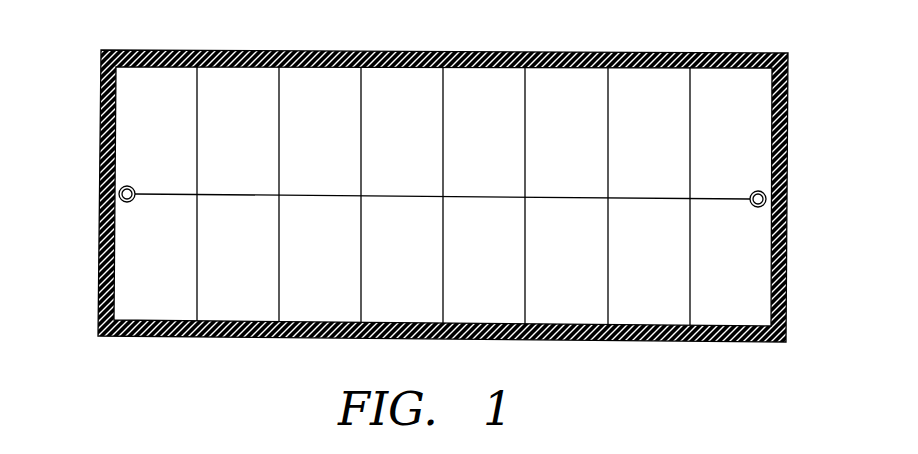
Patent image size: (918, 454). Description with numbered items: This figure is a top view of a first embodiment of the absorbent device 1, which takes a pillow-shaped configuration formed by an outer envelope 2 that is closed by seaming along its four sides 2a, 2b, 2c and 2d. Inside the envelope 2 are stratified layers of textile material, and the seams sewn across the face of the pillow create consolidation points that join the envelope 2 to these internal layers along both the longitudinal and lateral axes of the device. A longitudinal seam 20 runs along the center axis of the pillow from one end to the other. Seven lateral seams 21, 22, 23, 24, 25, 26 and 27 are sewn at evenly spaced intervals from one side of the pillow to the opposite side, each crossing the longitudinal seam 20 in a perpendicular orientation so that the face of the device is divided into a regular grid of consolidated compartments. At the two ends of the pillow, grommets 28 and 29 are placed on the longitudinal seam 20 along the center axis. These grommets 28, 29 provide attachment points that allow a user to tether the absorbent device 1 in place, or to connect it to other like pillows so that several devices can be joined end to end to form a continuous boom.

The absorbent device 1 is at (490, 175).
The envelope 2 is at (570, 98).
The side 2a is at (645, 343).
The side 2b is at (99, 267).
The side 2c is at (218, 50).
The side 2d is at (787, 105).
The longitudinal seam 20 is at (648, 197).
The lateral seam 21 is at (197, 232).
The lateral seam 22 is at (279, 232).
The lateral seam 23 is at (361, 232).
The lateral seam 24 is at (443, 232).
The lateral seam 25 is at (525, 232).
The lateral seam 26 is at (608, 232).
The lateral seam 27 is at (690, 232).
The grommet 28 is at (127, 185).
The grommet 29 is at (757, 190).